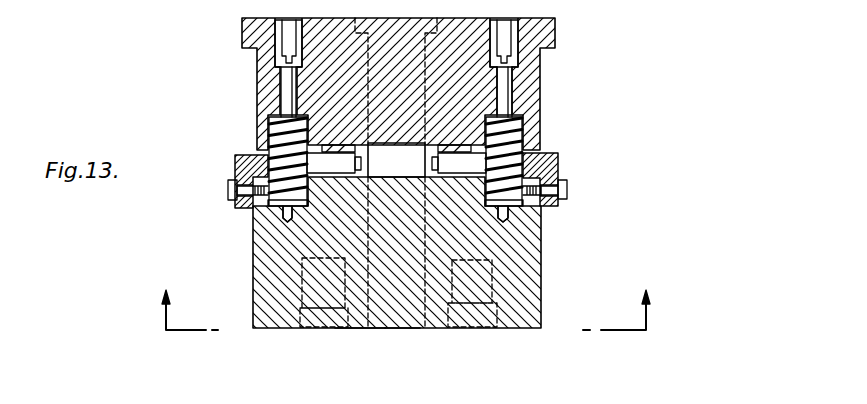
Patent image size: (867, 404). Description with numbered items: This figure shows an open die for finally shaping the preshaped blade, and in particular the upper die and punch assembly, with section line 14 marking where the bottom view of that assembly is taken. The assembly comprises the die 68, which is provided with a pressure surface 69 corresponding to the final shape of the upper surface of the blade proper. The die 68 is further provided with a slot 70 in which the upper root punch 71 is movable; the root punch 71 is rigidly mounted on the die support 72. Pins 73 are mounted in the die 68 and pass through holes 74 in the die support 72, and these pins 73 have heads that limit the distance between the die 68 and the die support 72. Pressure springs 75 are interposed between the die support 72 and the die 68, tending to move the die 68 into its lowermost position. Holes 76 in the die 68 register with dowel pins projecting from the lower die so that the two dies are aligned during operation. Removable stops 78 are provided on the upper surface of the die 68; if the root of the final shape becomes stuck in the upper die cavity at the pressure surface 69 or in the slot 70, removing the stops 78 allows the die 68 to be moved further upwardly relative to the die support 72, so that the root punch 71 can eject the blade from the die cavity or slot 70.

The section line 14- 14 is at (408, 298).
The die 68 is at (263, 297).
The pressure surface 69 is at (400, 330).
The slot 70 is at (360, 349).
The upper root punch 71 is at (372, 158).
The die support 72 is at (528, 68).
The pins 73 is at (288, 90).
The holes 74 is at (277, 80).
The pressure springs 75 is at (268, 150).
The holes 76 is at (322, 218).
The removable stops 78 is at (229, 176).